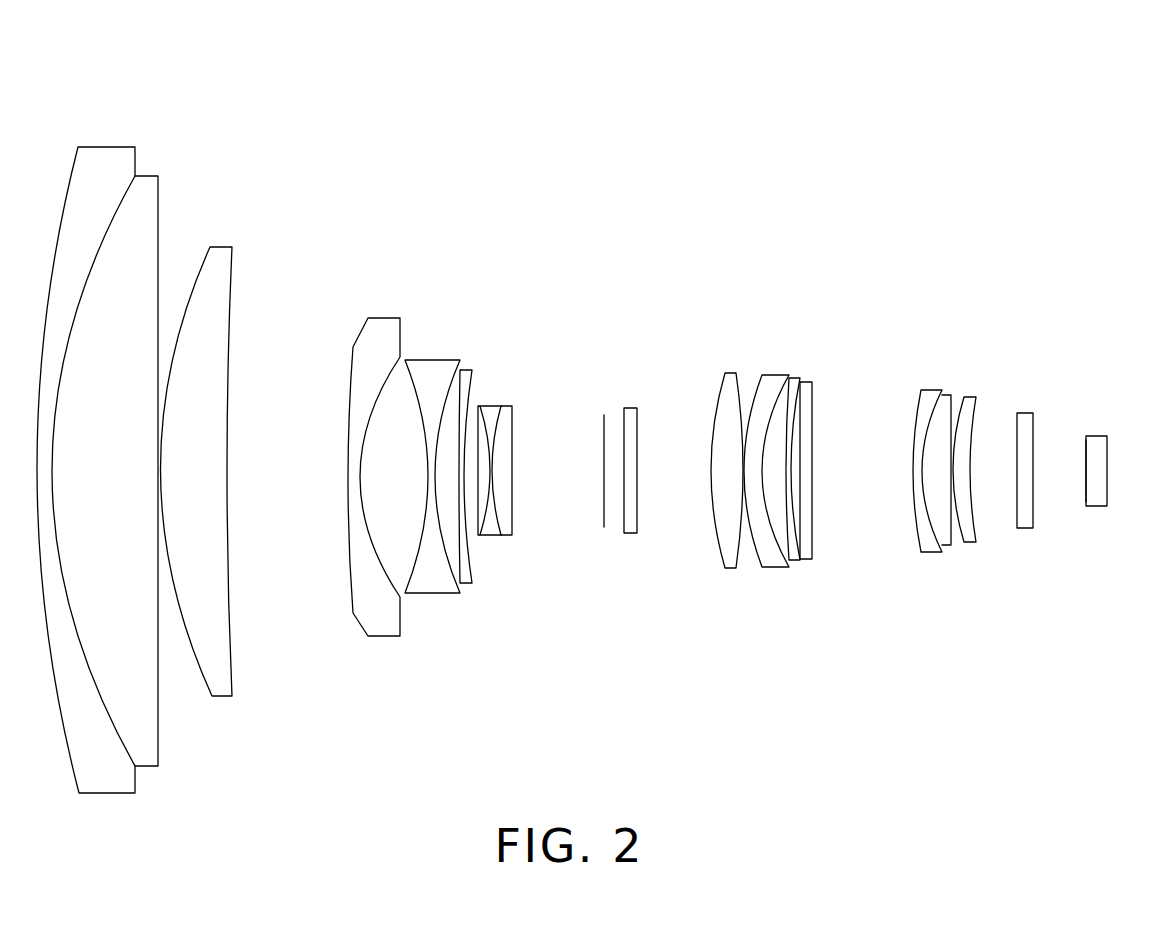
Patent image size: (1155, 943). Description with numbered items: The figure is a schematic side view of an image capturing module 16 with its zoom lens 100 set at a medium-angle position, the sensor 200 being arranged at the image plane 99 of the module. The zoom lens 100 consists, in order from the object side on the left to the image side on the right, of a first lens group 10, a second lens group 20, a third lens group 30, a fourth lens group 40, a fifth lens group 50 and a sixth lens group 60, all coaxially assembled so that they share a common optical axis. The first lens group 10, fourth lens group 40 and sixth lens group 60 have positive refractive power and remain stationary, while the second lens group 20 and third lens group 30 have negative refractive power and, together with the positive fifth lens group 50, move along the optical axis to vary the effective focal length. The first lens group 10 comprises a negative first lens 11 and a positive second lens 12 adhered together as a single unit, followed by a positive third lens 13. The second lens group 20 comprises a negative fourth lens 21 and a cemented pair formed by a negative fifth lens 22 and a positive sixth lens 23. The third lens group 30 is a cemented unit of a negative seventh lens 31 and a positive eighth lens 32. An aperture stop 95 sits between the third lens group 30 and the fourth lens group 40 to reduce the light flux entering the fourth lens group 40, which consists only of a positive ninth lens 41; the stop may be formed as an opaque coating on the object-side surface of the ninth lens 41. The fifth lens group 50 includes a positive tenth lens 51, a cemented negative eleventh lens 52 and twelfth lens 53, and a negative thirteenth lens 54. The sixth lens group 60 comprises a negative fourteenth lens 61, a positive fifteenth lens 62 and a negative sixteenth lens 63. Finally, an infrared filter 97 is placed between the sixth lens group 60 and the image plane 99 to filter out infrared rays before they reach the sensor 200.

The zoom lens 100 is at (947, 260).
The first lens group 10 is at (238, 100).
The first lens 11 is at (93, 175).
The second lens 12 is at (145, 210).
The third lens 13 is at (215, 272).
The image capturing module 16 is at (974, 132).
The second lens group 20 is at (482, 278).
The fourth lens 21 is at (375, 357).
The fifth lens 22 is at (430, 380).
The sixth lens 23 is at (453, 402).
The third lens group 30 is at (582, 295).
The seventh lens 31 is at (490, 417).
The eighth lens 32 is at (507, 427).
The fourth lens group 40 is at (627, 380).
The ninth lens 41 is at (630, 427).
The aperture stop 95 is at (602, 425).
The fifth lens group 50 is at (835, 312).
The tenth lens 51 is at (728, 410).
The eleventh lens 52 is at (766, 392).
The twelfth lens 53 is at (792, 392).
The thirteenth lens 54 is at (810, 397).
The sixth lens group 60 is at (992, 327).
The fourteenth lens 61 is at (923, 410).
The fifteenth lens 62 is at (946, 417).
The sixteenth lens 63 is at (970, 412).
The infrared filter 97 is at (1025, 423).
The image plane 99 is at (1084, 483).
The sensor 200 is at (1097, 450).